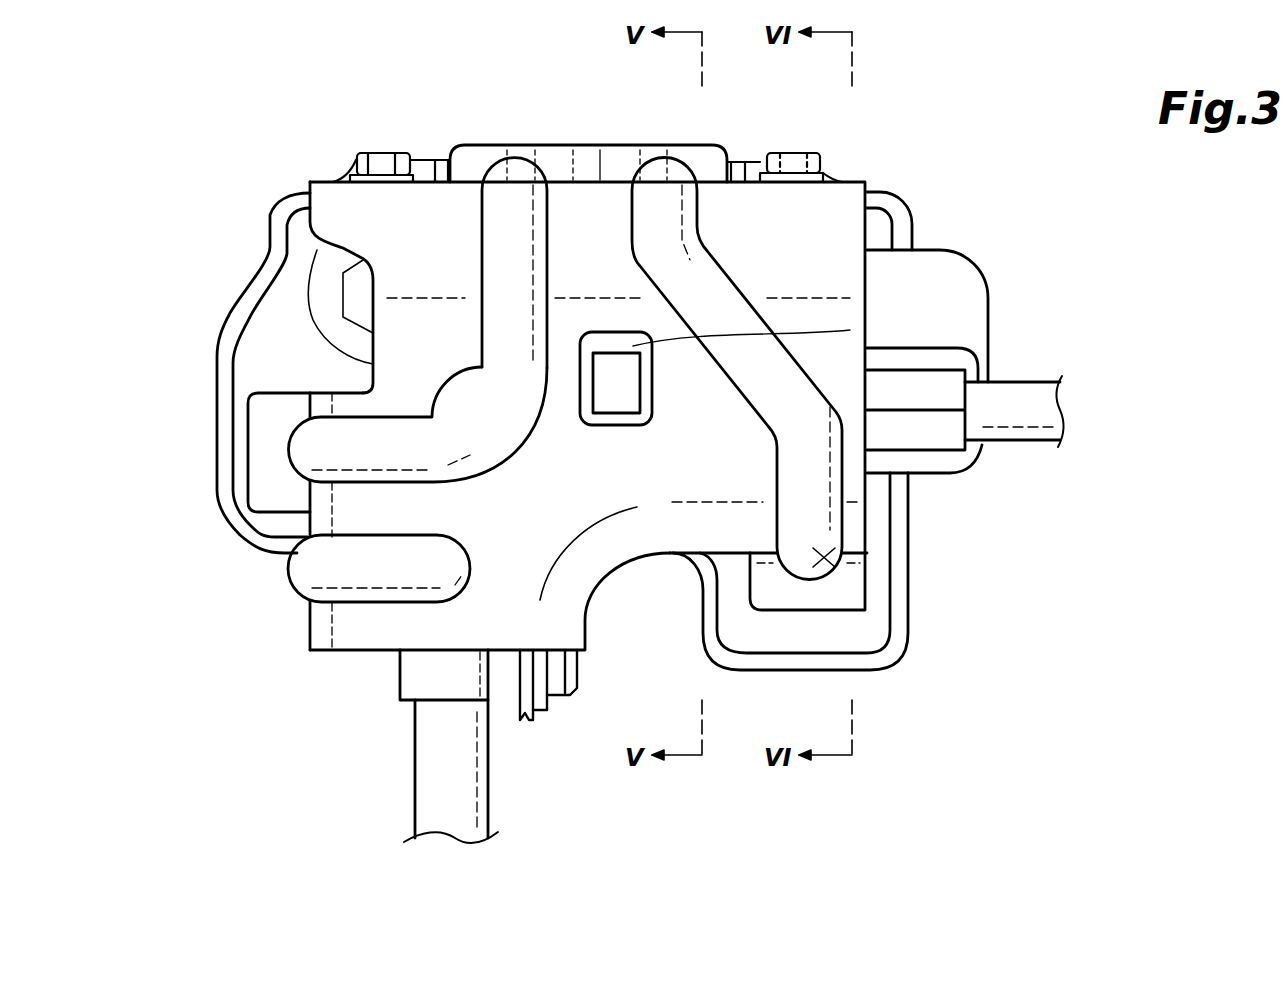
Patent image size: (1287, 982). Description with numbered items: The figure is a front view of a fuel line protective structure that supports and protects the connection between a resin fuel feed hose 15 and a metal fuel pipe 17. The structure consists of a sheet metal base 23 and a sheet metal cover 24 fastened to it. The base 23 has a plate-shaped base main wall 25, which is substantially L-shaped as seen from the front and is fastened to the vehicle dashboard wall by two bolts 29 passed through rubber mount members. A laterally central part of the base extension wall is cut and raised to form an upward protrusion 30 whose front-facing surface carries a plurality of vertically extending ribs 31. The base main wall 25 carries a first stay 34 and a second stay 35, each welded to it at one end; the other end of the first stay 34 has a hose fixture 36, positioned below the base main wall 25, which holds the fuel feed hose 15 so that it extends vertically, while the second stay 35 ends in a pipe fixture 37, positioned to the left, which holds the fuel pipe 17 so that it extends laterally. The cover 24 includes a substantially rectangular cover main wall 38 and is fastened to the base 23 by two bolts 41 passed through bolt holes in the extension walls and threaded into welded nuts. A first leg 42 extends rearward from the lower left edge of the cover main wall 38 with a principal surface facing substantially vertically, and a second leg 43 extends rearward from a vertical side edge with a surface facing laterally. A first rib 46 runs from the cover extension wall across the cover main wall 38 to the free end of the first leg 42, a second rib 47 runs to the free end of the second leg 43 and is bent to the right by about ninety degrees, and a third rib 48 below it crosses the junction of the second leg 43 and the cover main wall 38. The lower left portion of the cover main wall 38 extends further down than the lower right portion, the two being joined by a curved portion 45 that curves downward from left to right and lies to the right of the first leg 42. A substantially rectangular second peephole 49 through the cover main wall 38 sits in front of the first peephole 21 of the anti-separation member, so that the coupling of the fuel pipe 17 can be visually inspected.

The fuel feed hose 15 is at (417, 790).
The fuel pipe 17 is at (1025, 435).
The first peephole 21 is at (627, 413).
The base 23 is at (255, 295).
The cover 24 is at (857, 173).
The base main wall 25 is at (285, 330).
The bolts 29 is at (357, 283).
The protrusion 30 is at (497, 145).
The ribs 31 is at (653, 157).
The first stay 34 is at (525, 725).
The second stay 35 is at (970, 278).
The hose fixture 36 is at (400, 686).
The pipe fixture 37 is at (943, 443).
The cover main wall 38 is at (390, 620).
The bolts 41 is at (384, 160).
The first leg 42 is at (797, 600).
The second leg 43 is at (265, 490).
The curved portion 45 is at (588, 607).
The first rib 46 is at (815, 551).
The second rib 47 is at (372, 428).
The third rib 48 is at (353, 577).
The second peephole 49 is at (850, 330).